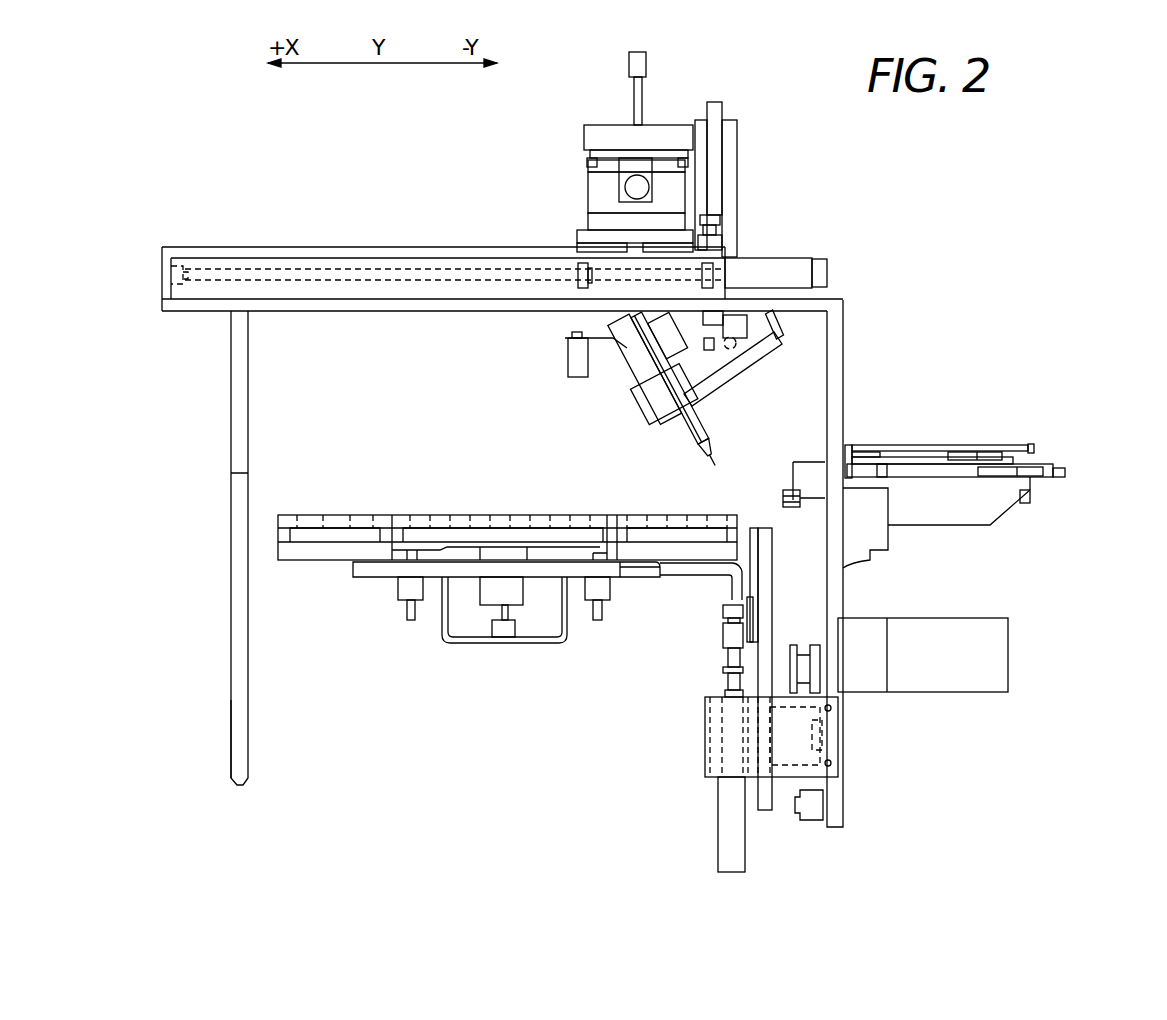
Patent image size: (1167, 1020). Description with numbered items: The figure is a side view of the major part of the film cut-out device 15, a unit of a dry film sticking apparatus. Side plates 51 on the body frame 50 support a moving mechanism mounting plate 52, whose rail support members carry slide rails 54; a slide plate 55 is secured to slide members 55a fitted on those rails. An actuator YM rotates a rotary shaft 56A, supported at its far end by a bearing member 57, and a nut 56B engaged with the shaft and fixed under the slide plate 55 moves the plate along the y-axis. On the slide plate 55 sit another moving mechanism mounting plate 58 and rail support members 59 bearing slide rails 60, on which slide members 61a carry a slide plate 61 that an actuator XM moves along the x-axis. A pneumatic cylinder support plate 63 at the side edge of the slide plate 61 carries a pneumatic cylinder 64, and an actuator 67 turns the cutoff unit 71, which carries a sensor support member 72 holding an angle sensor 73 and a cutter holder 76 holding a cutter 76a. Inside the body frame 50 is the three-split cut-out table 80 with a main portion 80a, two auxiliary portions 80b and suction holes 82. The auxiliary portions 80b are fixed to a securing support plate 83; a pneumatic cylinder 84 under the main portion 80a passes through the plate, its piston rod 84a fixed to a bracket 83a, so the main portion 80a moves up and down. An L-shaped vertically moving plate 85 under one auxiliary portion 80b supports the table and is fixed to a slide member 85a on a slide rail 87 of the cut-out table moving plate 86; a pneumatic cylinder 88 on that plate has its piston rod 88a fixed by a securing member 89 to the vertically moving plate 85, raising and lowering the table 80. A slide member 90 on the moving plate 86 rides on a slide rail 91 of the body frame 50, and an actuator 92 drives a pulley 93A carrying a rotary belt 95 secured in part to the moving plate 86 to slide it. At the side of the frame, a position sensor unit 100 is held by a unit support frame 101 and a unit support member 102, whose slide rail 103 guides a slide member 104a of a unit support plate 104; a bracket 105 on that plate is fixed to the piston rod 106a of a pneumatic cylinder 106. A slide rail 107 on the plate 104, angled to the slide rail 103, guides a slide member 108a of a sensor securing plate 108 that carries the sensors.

The film cut-out device 15 is at (846, 315).
The body frame 50 is at (237, 724).
The side plates 51 is at (232, 400).
The moving mechanism mounting plate 52 is at (400, 305).
The slide rails 54 is at (248, 252).
The slide plate 55 is at (577, 238).
The slide members 55a is at (577, 249).
The rotary shaft 56A is at (360, 270).
The nut 56B is at (567, 292).
The bearing member 57 is at (176, 265).
The moving mechanism mounting plate 58 is at (598, 222).
The rail support members 59 is at (595, 193).
The slide rails 60 is at (588, 168).
The slide plate 61 is at (585, 152).
The slide members 61a is at (588, 158).
The pneumatic cylinder support plate 63 is at (727, 163).
The pneumatic cylinder 64 is at (720, 105).
The actuator 67 is at (740, 130).
The cutoff unit 71 is at (622, 395).
The sensor support member 72 is at (770, 348).
The angle sensor 73 is at (778, 322).
The cutter holder 76 is at (695, 417).
The cutter 76a is at (710, 453).
The cut-out table 80 is at (405, 512).
The main portion 80a is at (478, 517).
The auxiliary portions 80b is at (335, 520).
The suction holes 82 is at (375, 525).
The securing support plate 83 is at (358, 566).
The bracket 83a is at (470, 645).
The pneumatic cylinder 84 is at (523, 603).
The piston rod 84a is at (505, 638).
The vertically moving plate 85 is at (683, 570).
The slide member 85a is at (745, 600).
The cut-out table moving plate 86 is at (773, 582).
The slide rail 87 is at (752, 528).
The pneumatic cylinder 88 is at (718, 795).
The piston rod 88a is at (723, 655).
The securing member 89 is at (723, 612).
The slide member 90 is at (840, 750).
The slide rail 91 is at (840, 735).
The actuator 92 is at (1008, 660).
The pulley 93A is at (817, 668).
The rotary belt 95 is at (810, 653).
The position sensor unit 100 is at (997, 440).
The unit support frame 101 is at (875, 545).
The unit support member 102 is at (985, 522).
The slide rail 103 is at (1062, 477).
The unit support plate 104 is at (1047, 465).
The slide member 104a is at (1062, 470).
The bracket 105 is at (867, 455).
The pneumatic cylinder 106 is at (1030, 503).
The piston rod 106a is at (780, 522).
The slide rail 107 is at (908, 457).
The sensor securing plate 108 is at (950, 445).
The slide member 108a is at (982, 448).
The actuator XM is at (642, 185).
The actuator YM is at (788, 268).